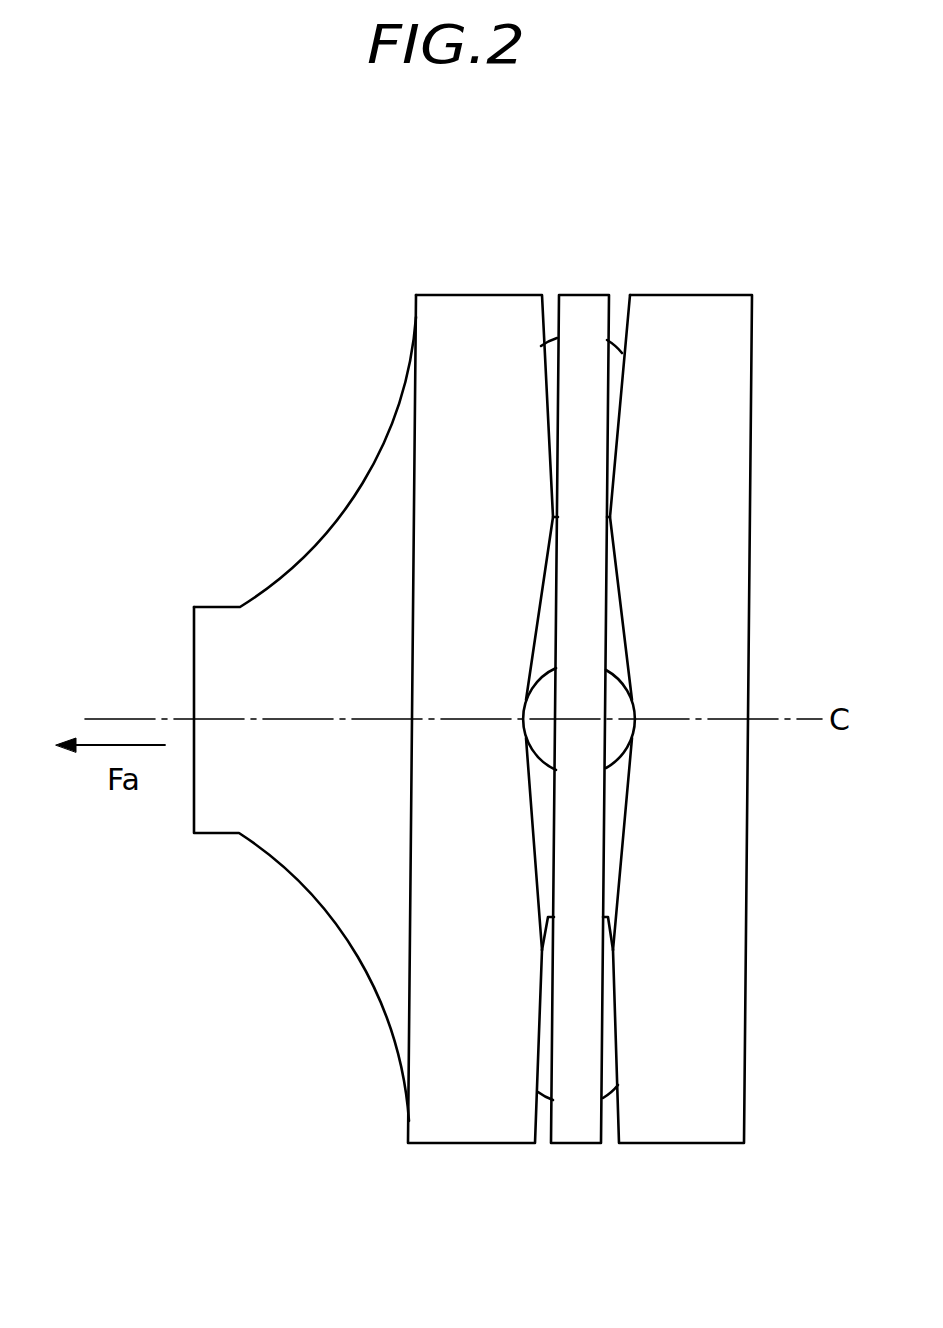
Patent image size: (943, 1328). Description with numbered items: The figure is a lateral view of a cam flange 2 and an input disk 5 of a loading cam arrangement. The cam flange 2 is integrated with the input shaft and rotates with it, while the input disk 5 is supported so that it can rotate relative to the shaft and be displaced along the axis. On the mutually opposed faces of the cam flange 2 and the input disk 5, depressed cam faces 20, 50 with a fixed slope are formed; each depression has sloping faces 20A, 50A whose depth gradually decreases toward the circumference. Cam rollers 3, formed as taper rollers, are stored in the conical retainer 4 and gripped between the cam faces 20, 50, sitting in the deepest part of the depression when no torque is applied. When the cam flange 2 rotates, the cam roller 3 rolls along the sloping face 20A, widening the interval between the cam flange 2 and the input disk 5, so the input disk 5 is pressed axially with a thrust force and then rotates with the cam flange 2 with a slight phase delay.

The cam flange 2 is at (698, 297).
The cam roller 3 is at (612, 370).
The conical retainer 4 is at (592, 297).
The input disk 5 is at (445, 297).
The cam face 20 is at (625, 595).
The sloping face 20A is at (625, 797).
The cam face 50 is at (535, 585).
The sloping face 50A is at (525, 805).